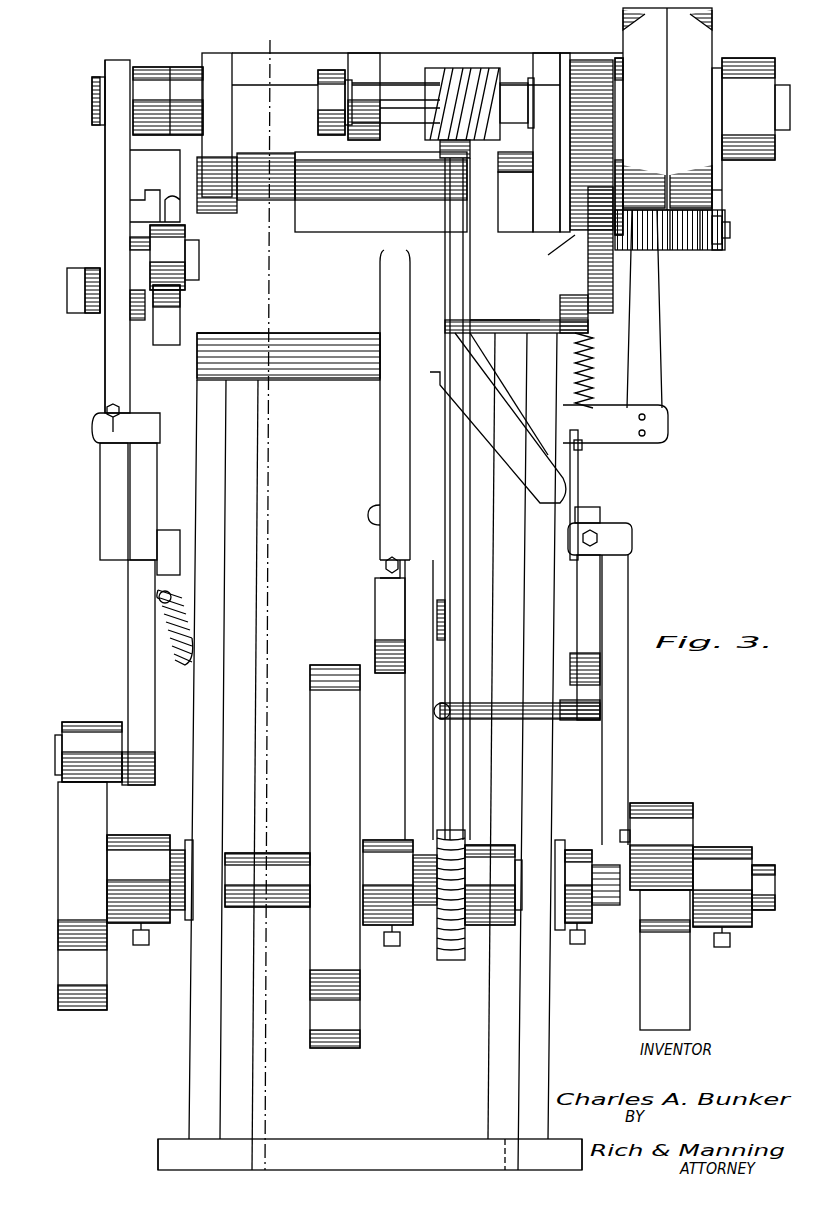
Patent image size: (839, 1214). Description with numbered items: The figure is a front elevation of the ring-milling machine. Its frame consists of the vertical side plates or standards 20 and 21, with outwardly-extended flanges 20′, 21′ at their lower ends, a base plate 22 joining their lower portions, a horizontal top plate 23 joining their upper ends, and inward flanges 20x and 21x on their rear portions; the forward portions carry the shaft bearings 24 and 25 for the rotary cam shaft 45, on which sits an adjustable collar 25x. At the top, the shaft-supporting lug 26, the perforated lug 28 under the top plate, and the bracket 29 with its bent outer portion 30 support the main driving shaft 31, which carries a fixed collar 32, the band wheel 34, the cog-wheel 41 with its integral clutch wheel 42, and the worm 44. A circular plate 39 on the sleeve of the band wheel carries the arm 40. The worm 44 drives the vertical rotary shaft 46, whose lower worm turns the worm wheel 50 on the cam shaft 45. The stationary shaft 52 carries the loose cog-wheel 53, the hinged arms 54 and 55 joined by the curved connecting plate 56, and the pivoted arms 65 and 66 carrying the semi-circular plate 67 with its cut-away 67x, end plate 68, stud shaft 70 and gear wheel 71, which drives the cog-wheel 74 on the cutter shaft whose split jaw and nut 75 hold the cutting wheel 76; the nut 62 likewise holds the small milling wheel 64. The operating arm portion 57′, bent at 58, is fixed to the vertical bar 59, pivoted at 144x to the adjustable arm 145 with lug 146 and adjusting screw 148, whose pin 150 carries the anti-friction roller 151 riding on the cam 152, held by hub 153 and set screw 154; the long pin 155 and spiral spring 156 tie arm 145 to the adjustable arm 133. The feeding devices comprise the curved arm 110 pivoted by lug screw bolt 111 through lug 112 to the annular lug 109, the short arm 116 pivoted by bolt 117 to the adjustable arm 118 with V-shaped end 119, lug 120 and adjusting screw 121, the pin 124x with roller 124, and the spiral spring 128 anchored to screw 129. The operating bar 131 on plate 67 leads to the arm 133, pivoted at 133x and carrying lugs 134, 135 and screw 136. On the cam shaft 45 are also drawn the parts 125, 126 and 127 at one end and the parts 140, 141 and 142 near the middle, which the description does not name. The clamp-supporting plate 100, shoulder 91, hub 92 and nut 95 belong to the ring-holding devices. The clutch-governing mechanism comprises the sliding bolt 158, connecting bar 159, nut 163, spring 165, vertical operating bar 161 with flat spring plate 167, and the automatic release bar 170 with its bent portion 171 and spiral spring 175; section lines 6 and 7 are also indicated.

The section line 6 is at (267, 606).
The section line 7 is at (485, 1165).
The side plate or standard 20 is at (206, 487).
The flange 20x is at (250, 516).
The outwardly-extended flange 20′ is at (165, 1150).
The side plate or standard 21 is at (550, 474).
The flange 21x is at (510, 749).
The outwardly-extended flange 21′ is at (562, 1162).
The base plate 22 is at (386, 1152).
The horizontal top member or plate 23 is at (398, 53).
The shaft bearing 24 is at (188, 925).
The shaft bearing 25 is at (568, 927).
The adjustable collar 25x is at (571, 871).
The shaft-supporting block or lug 26 is at (215, 62).
The perforated forwardly-extended lug 28 is at (364, 70).
The bracket 29 is at (603, 55).
The outer portion of bracket 30 is at (760, 150).
The main driving rotary shaft 31 is at (407, 93).
The fixed collar 32 is at (332, 76).
The band wheel 34 is at (705, 43).
The circular plate 39 is at (718, 70).
The arm 40 is at (718, 192).
The cog-wheel 41 is at (582, 70).
The clutch wheel 42 is at (619, 58).
The worm 44 is at (465, 72).
The rotary cam shaft 45 is at (296, 907).
The vertical rotary shaft 46 is at (445, 157).
The worm wheel 50 is at (455, 962).
The stationary shaft 52 is at (381, 192).
The cog-wheel 53 is at (553, 172).
The plate or arm 54 is at (252, 178).
The plate or arm 55 is at (512, 165).
The outwardly-curved connecting plate 56 is at (440, 150).
The oblique portion of operating arm 57′ is at (498, 418).
The right-angle bend 58 is at (597, 515).
The vertical bar 59 is at (590, 598).
The nut 62 is at (140, 258).
The milling or cutting wheel 64 is at (130, 241).
The pivoted arm 65 is at (292, 176).
The pivoted arm 66 is at (500, 202).
The semi-circular plate or casting 67 is at (288, 338).
The cut-away portion 67x is at (494, 313).
The end plate 68 is at (549, 252).
The stud shaft 70 is at (590, 265).
The gear wheel 71 is at (586, 302).
The cog-wheel 74 is at (516, 325).
The nut 75 is at (170, 312).
The cutting wheel 76 is at (128, 305).
The shoulder 91 is at (70, 312).
The short hub 92 is at (88, 318).
The nut 95 is at (68, 284).
The clamp-supporting plate 100 is at (120, 163).
The annular lug 109 is at (178, 72).
The curved arm 110 is at (105, 185).
The lug screw bolt 111 is at (95, 98).
The inward projection or lug 112 is at (155, 75).
The short arm 116 is at (108, 516).
The pivot bolt 117 is at (170, 575).
The adjustable arm 118 is at (138, 641).
The V-shaped upper end 119 is at (145, 479).
The forwardly-extended lug 120 is at (95, 441).
The adjusting screw 121 is at (100, 414).
The anti-friction roller 124 is at (100, 730).
The outwardly-extended pin 124x is at (56, 745).
The drum 125 is at (70, 870).
The gear 126 is at (158, 845).
The set screw 127 is at (140, 948).
The spiral spring 128 is at (170, 645).
The screw 129 is at (160, 602).
The operating bar or arm 131 is at (398, 431).
The adjustable plate or arm 133 is at (413, 756).
The pivot bolt 133x is at (437, 630).
The lug 134 is at (384, 565).
The lug 135 is at (368, 513).
The adjusting screw 136 is at (386, 579).
The drum 140 is at (328, 1049).
The gear 141 is at (372, 927).
The set screw 142 is at (392, 948).
The pivot 144x is at (600, 668).
The adjustable arm or plate 145 is at (618, 743).
The lug 146 is at (620, 545).
The adjusting screw 148 is at (598, 545).
The pin 150 is at (735, 848).
The anti-friction roller 151 is at (695, 840).
The cam 152 is at (662, 988).
The hub 153 is at (740, 930).
The set screw 154 is at (722, 949).
The long pin 155 is at (590, 712).
The spiral spring 156 is at (434, 712).
The sliding bolt 158 is at (690, 242).
The connecting bar 159 is at (705, 237).
The vertical operating bar 161 is at (645, 332).
The nut 163 is at (726, 236).
The spiral spring 165 is at (680, 244).
The flat spring plate 167 is at (640, 443).
The bar 170 is at (589, 495).
The bent portion of bar 171 is at (582, 447).
The spiral spring 175 is at (600, 370).